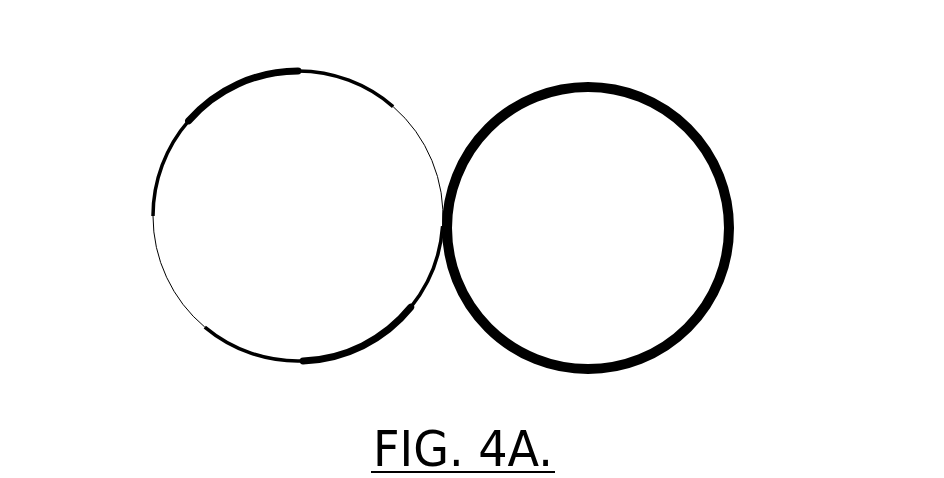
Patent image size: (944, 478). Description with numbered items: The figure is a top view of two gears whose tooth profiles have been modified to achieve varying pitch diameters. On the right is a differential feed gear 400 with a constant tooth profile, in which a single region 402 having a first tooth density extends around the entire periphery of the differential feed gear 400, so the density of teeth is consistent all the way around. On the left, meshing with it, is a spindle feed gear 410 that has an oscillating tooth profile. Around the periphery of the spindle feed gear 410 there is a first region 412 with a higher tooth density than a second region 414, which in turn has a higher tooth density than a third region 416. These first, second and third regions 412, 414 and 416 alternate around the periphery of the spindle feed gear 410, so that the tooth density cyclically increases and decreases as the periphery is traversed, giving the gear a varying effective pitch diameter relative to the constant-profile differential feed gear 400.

The differential feed gear 400 is at (737, 98).
The region having a first tooth density 402 is at (735, 221).
The spindle feed gear 410 is at (122, 115).
The first region 412 is at (243, 80).
The second region 414 is at (350, 79).
The third region 416 is at (425, 148).